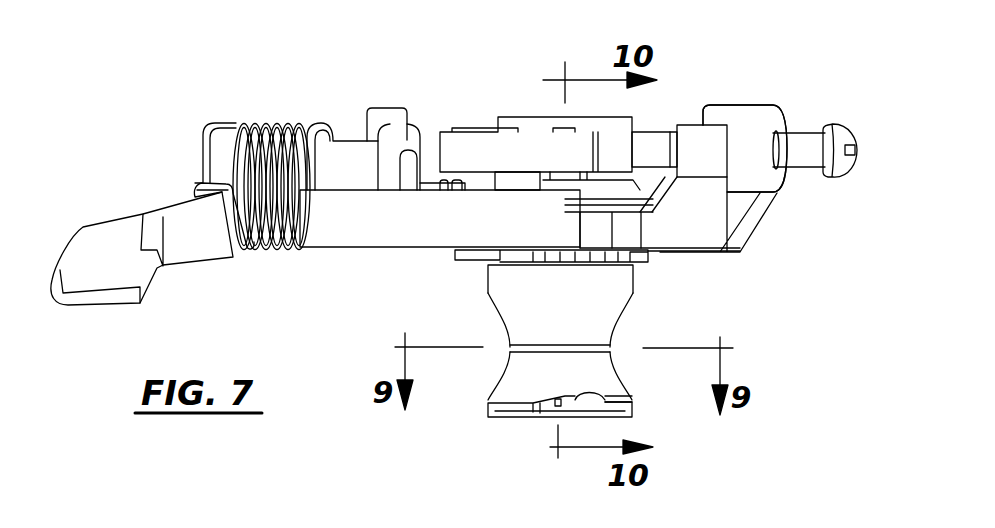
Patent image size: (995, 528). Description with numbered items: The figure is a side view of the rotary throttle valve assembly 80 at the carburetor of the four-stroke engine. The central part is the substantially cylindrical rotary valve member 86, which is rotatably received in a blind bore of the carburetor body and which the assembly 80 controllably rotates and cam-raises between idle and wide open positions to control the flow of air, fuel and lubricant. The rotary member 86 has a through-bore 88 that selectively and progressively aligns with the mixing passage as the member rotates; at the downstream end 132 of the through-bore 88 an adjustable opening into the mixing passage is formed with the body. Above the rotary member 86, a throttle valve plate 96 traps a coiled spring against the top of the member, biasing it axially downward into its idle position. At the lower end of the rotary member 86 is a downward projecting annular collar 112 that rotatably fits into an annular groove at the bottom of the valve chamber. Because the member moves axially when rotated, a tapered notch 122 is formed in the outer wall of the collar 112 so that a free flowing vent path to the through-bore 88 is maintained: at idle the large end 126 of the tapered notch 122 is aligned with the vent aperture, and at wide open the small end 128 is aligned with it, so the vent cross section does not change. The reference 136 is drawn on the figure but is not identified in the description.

The rotary throttle valve assembly 80 is at (768, 60).
The throttle valve plate 96 is at (358, 227).
The rotary valve member 86 is at (562, 382).
The through-bore 88 is at (628, 308).
The downstream end 132 is at (615, 346).
The large end 126 is at (630, 400).
The tapered notch 122 is at (580, 401).
The annular collar 112 is at (570, 403).
The small end 128 is at (542, 413).
The flange 136 is at (493, 373).